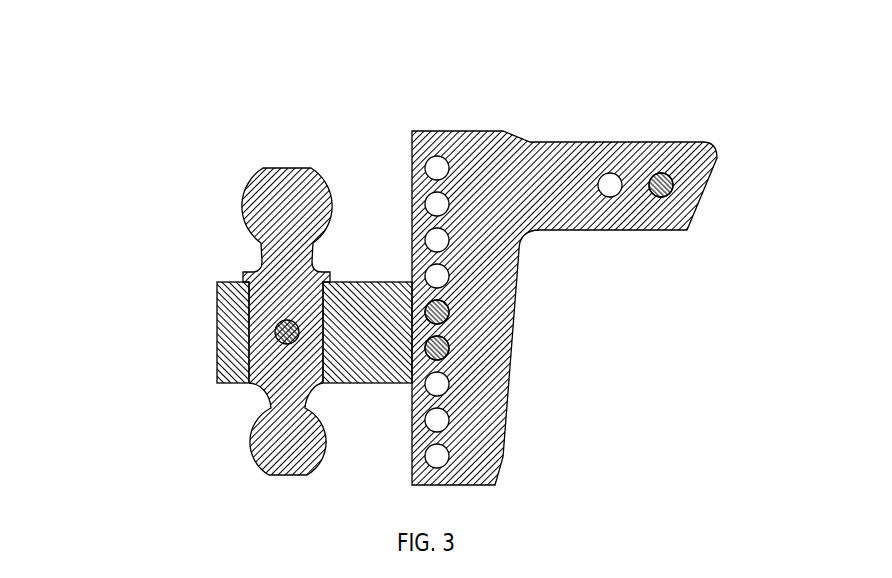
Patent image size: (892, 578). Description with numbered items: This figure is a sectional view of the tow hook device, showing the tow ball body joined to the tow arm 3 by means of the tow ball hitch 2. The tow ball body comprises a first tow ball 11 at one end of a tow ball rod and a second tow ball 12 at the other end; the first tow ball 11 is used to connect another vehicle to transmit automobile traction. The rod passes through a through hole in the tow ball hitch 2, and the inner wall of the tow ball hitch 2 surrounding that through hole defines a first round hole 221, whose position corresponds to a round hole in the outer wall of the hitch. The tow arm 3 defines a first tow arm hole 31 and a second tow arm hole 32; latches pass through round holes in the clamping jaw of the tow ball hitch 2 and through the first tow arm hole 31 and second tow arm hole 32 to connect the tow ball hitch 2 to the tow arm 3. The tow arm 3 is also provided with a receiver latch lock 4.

The tow ball hitch 2 is at (336, 218).
The tow arm 3 is at (564, 252).
The receiver latch lock 4 is at (711, 137).
The first tow ball 11 is at (245, 242).
The second tow ball 12 is at (229, 446).
The first tow arm hole 31 is at (513, 351).
The second tow arm hole 32 is at (507, 387).
The first round hole 221 is at (189, 383).